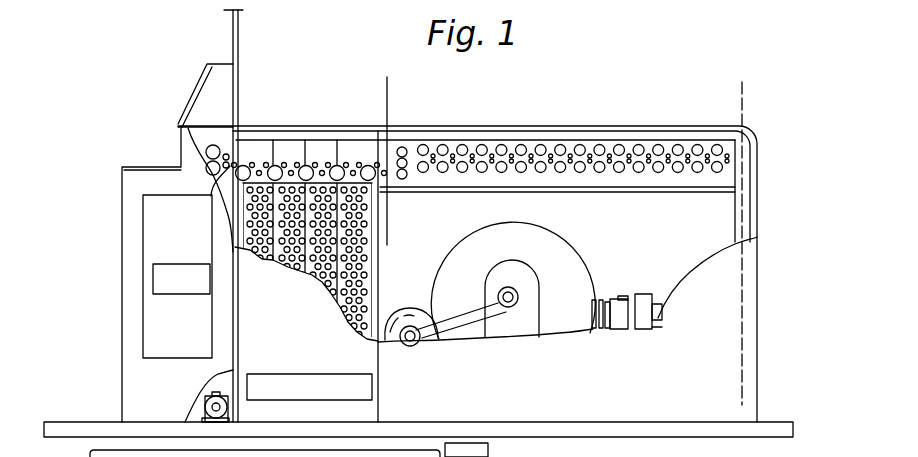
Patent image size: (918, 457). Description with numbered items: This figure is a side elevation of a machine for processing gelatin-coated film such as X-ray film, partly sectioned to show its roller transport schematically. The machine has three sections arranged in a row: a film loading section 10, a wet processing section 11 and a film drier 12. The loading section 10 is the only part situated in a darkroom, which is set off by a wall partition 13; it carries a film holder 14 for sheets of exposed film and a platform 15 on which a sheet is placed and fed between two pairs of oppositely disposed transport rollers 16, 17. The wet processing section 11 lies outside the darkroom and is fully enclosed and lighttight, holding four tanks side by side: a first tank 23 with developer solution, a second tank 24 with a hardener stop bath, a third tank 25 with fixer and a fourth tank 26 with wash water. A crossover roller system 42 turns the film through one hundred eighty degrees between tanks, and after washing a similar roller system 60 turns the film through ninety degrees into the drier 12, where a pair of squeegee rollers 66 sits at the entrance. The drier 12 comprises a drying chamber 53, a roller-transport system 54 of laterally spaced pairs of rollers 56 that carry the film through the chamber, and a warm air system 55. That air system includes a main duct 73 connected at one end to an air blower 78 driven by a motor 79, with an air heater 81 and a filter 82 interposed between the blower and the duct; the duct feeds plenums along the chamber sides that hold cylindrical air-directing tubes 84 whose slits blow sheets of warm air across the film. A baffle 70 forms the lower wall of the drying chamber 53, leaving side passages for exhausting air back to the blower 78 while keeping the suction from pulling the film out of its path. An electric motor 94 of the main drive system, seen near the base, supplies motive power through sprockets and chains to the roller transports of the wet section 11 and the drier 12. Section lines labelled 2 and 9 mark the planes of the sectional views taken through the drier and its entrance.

The section line 2- 2 is at (748, 92).
The section line 9- 9 is at (387, 82).
The film loading section 10 is at (141, 104).
The wet processing section 11 is at (291, 369).
The film drier 12 is at (588, 387).
The wall partition 13 is at (238, 26).
The film holder 14 is at (203, 73).
The platform 15 is at (152, 165).
The transport rollers 16 is at (209, 171).
The transport rollers 17 is at (214, 192).
The first tank 23 is at (266, 259).
The second tank 24 is at (288, 268).
The third tank 25 is at (322, 283).
The fourth tank 26 is at (345, 312).
The crossover roller system 42 is at (342, 166).
The drying chamber 53 is at (548, 146).
The roller-transport system 54 is at (478, 172).
The warm air system 55 is at (614, 302).
The rollers 56 is at (645, 148).
The roller system 60 is at (250, 165).
The squeegee rollers 66 is at (402, 146).
The baffle 70 is at (647, 190).
The main duct 73 is at (660, 315).
The air blower 78 is at (562, 244).
The motor 79 is at (397, 314).
The air heater 81 is at (627, 297).
The filter 82 is at (643, 296).
The air-directing tubes 84 is at (460, 148).
The electric motor 94 is at (200, 394).